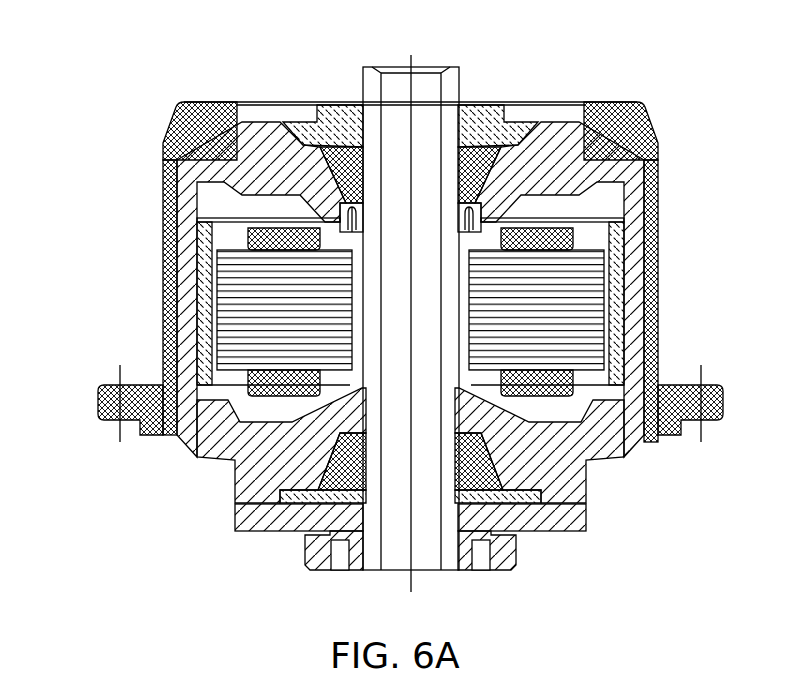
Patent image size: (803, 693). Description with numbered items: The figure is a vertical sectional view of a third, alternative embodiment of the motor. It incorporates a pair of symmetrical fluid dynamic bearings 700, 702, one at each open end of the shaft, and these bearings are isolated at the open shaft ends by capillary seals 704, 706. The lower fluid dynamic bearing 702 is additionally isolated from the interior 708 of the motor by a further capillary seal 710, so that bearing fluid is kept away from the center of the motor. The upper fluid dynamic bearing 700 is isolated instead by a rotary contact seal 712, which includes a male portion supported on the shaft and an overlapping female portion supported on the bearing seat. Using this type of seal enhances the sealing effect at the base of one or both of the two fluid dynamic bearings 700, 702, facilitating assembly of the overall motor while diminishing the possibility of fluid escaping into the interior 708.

The fluid dynamic bearing 700 is at (478, 150).
The fluid dynamic bearing 702 is at (512, 533).
The capillary seal 704 is at (345, 512).
The capillary seal 706 is at (350, 105).
The interior of the motor 708 is at (173, 435).
The capillary seal 710 is at (228, 378).
The rotary contact seal 712 is at (478, 228).